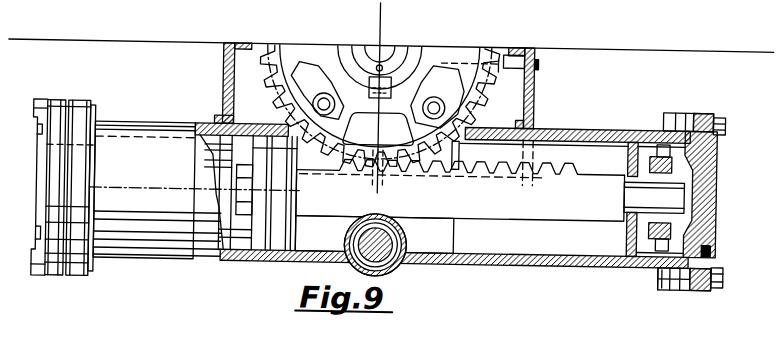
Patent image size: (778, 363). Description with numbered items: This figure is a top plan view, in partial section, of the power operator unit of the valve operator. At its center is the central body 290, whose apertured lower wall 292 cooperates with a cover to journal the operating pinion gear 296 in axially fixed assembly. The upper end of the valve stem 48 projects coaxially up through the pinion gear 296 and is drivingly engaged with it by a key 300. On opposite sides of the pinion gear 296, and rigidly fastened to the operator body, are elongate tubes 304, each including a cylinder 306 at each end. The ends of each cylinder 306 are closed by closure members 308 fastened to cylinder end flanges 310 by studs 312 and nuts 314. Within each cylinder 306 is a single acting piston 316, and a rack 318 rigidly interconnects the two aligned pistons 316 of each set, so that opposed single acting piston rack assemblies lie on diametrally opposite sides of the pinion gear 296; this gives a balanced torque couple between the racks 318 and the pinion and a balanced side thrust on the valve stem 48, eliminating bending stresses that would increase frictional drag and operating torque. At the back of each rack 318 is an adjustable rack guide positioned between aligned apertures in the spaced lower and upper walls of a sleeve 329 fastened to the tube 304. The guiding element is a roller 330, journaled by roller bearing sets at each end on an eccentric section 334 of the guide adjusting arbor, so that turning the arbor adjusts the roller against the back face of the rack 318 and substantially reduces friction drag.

The valve stem 48 is at (352, 58).
The key 300 is at (385, 76).
The apertured lower wall 292 is at (239, 101).
The operating pinion gear 296 is at (470, 106).
The central body 290 is at (538, 98).
The closure member 308 is at (52, 156).
The cylinder 306 is at (146, 265).
The single acting piston 316 is at (269, 265).
The elongate tube 304 is at (460, 264).
The rack 318 is at (544, 248).
The sleeve 329 is at (350, 242).
The eccentric section 334 is at (408, 241).
The roller 330 is at (386, 216).
The cylinder end flange 310 is at (672, 286).
The nut 314 is at (713, 112).
The stud 312 is at (726, 120).